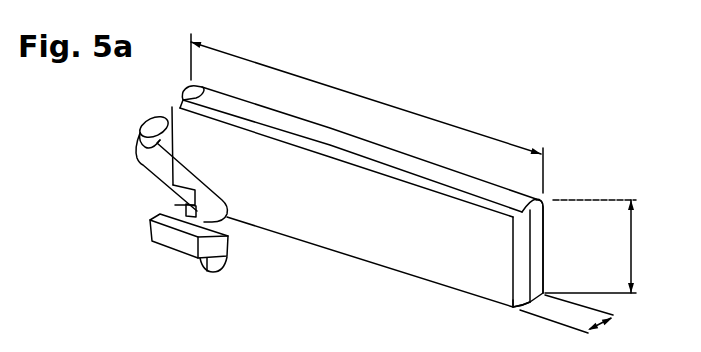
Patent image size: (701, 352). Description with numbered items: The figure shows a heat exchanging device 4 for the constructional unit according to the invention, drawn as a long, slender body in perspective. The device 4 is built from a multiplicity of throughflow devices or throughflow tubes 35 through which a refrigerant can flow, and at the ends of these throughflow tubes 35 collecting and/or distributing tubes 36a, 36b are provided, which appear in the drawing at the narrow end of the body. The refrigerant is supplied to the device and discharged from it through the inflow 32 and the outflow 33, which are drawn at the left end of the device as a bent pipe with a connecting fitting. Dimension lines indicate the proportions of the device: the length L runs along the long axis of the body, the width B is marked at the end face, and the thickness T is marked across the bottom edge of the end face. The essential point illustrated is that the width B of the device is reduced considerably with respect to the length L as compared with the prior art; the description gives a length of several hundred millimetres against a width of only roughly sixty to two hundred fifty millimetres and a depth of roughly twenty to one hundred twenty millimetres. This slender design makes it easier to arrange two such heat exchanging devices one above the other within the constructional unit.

The heat exchanging device 4 is at (345, 272).
The inflow 32 is at (143, 166).
The outflow 33 is at (233, 249).
The throughflow tubes 35 is at (353, 143).
The collecting and/or distributing tube 36a is at (537, 258).
The collecting and/or distributing tube 36b is at (520, 278).
The length L is at (381, 100).
The width B is at (633, 251).
The thickness dimension T is at (599, 323).